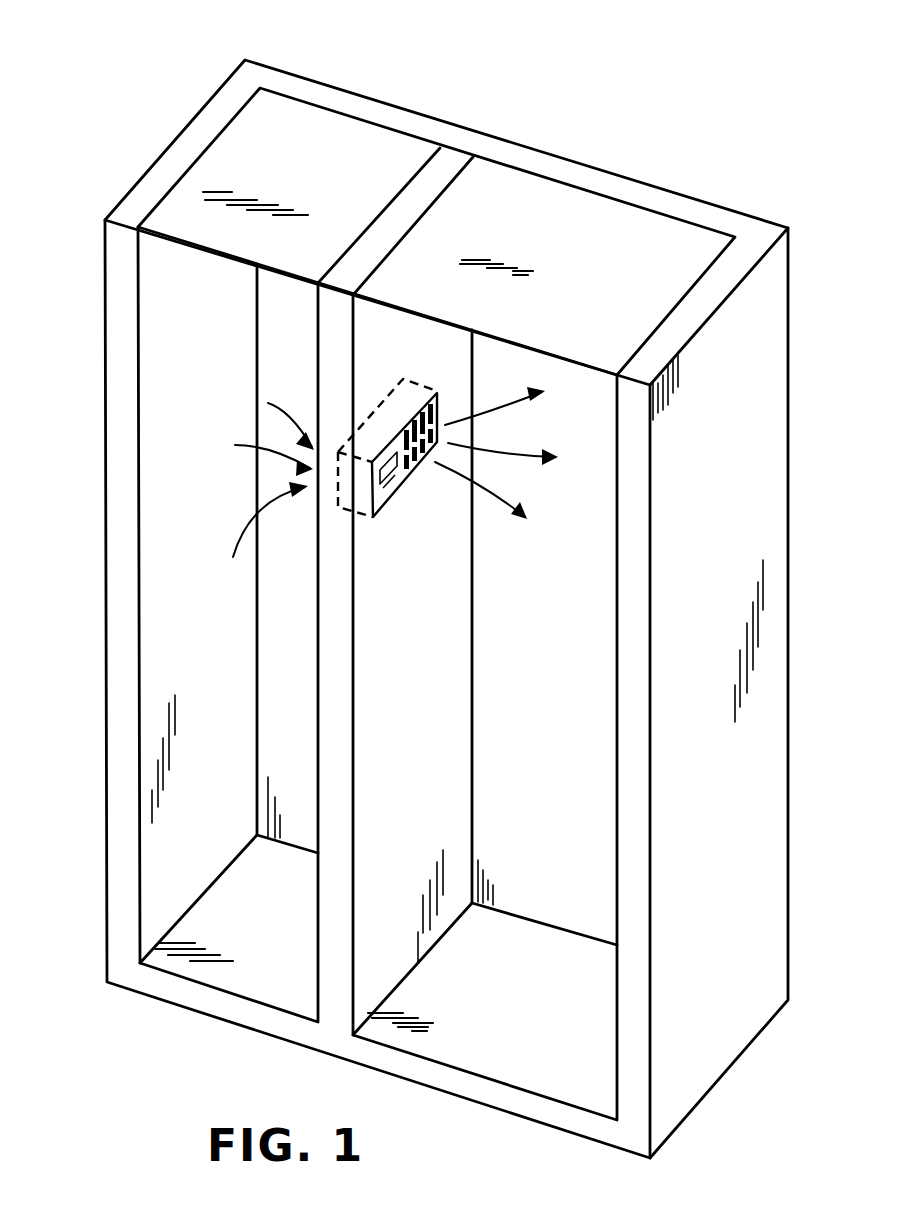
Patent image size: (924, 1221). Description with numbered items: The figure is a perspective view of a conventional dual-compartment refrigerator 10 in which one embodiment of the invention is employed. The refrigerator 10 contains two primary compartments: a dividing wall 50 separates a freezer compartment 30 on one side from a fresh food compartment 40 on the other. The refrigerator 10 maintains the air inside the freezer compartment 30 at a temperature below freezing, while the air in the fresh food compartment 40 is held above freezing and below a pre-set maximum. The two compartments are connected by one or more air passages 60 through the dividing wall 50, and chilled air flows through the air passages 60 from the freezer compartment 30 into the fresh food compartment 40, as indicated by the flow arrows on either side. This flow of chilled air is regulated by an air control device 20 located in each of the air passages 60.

The dual-compartment refrigerator 10 is at (522, 107).
The air control device 20 is at (438, 392).
The freezer compartment 30 is at (138, 455).
The fresh food compartment 40 is at (616, 643).
The dividing wall 50 is at (327, 577).
The air passage 60 is at (418, 378).